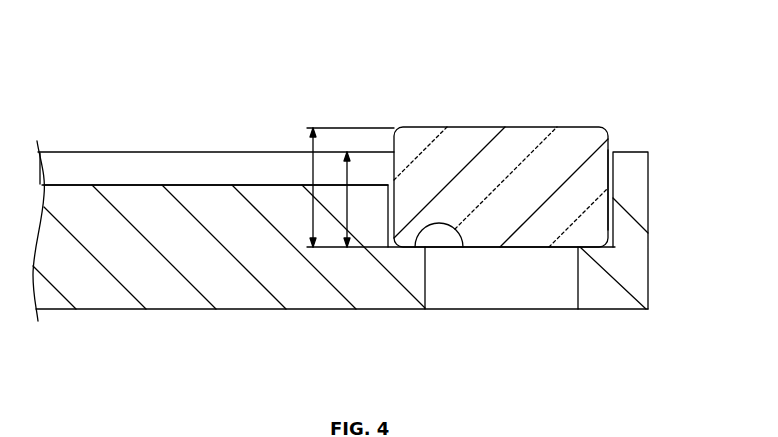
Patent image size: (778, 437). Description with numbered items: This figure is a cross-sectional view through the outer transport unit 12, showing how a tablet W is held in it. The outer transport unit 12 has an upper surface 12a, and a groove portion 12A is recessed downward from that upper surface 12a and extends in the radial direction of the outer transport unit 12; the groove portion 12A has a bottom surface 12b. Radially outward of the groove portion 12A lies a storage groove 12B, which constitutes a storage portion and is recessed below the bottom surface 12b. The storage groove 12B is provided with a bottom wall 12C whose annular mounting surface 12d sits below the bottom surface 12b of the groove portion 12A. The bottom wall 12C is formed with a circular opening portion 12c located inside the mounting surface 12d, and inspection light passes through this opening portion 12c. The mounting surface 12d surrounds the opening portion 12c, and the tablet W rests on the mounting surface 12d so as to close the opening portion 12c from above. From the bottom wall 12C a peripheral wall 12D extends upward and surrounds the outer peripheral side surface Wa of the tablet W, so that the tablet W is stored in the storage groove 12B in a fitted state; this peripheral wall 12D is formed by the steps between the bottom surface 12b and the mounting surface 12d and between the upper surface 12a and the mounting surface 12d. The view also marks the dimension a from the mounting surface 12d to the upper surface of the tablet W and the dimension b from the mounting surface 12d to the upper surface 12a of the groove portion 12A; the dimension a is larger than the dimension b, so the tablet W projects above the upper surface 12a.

The outer transport unit 12 is at (253, 107).
The upper surface 12a is at (85, 152).
The groove portion 12A is at (132, 180).
The bottom surface 12b is at (208, 185).
The storage groove 12B is at (534, 238).
The bottom wall 12C is at (636, 267).
The peripheral wall 12D is at (632, 197).
The opening portion 12c is at (578, 278).
The mounting surface 12d is at (463, 247).
The tablet W is at (478, 173).
The outer peripheral side surface Wa is at (616, 182).
The dimension a is at (308, 172).
The dimension b is at (345, 197).